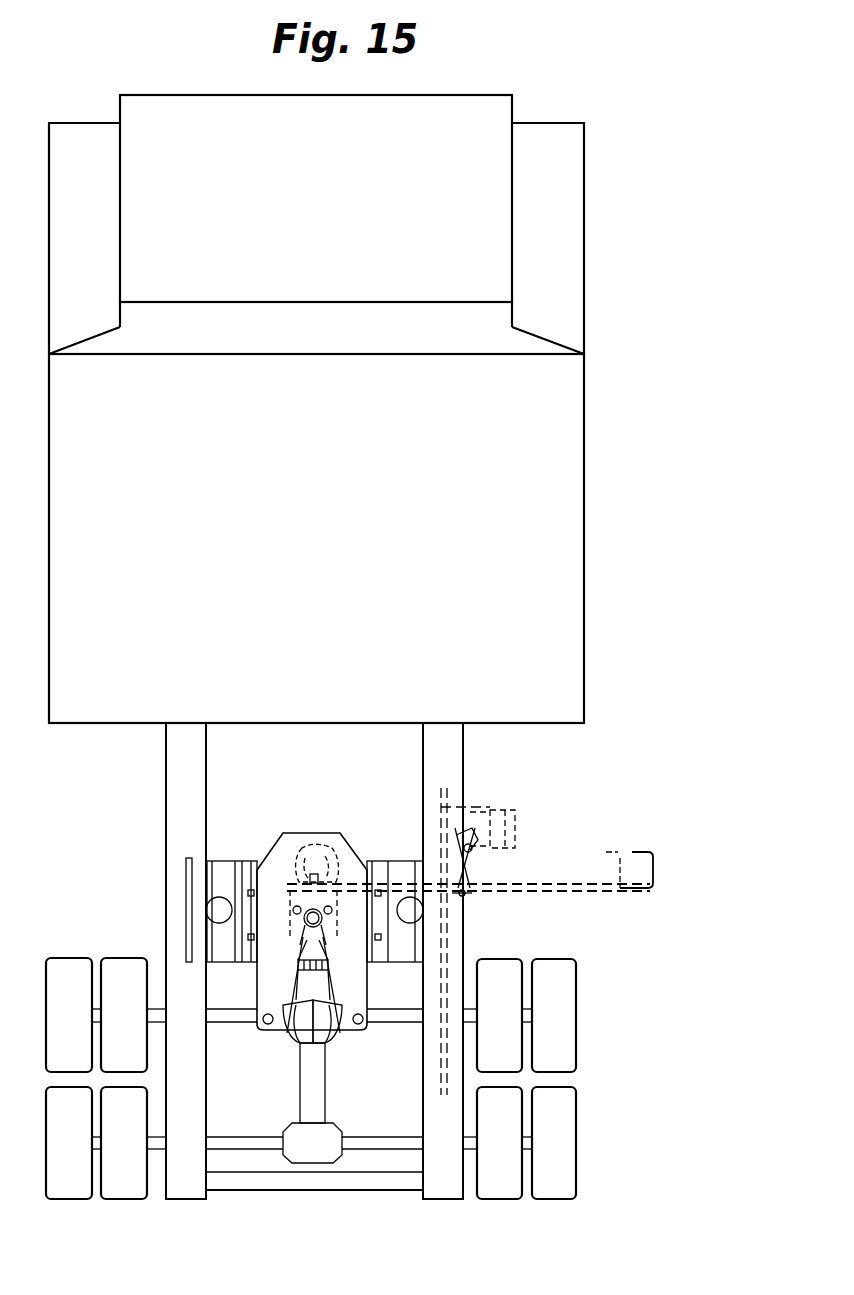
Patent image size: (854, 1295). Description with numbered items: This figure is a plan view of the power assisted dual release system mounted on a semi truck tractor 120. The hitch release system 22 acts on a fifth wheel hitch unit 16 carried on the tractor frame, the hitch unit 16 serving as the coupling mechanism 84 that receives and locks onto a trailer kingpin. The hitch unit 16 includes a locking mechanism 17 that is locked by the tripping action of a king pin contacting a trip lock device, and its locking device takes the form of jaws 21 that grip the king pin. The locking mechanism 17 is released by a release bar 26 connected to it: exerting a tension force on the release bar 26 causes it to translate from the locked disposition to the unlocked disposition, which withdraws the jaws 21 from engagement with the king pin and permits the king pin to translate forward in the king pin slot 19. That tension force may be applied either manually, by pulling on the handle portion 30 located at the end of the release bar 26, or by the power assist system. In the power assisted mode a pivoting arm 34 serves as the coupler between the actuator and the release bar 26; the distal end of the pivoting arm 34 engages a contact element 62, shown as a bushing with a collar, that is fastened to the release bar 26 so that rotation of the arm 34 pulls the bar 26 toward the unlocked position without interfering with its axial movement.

The semi tractor 120 is at (584, 563).
The hitch release system 22 is at (300, 878).
The coupling mechanism 84 is at (290, 905).
The fifth wheel hitch unit 16 is at (213, 901).
The jaws 21 is at (296, 938).
The locking mechanism 17 is at (296, 1040).
The king pin slot 19 is at (330, 1040).
The pivoting arm 34 is at (487, 858).
The release bar 26 is at (570, 887).
The handle portion 30 is at (640, 855).
The contact element 62 is at (455, 894).